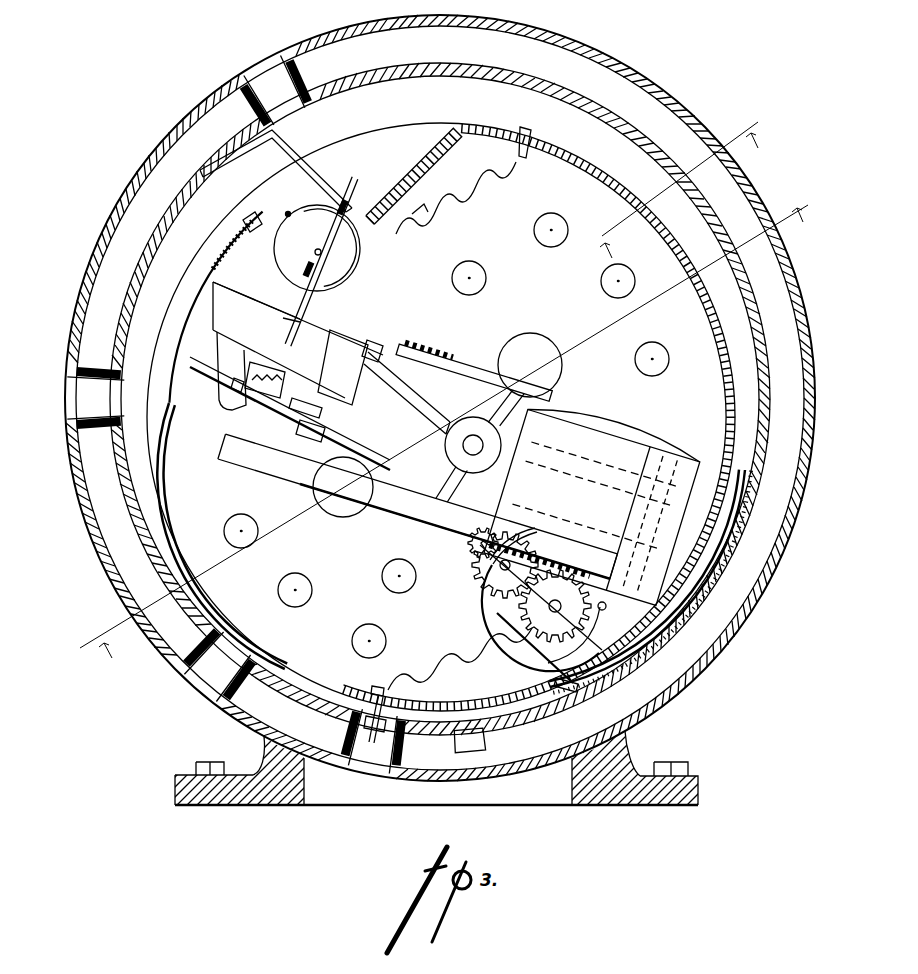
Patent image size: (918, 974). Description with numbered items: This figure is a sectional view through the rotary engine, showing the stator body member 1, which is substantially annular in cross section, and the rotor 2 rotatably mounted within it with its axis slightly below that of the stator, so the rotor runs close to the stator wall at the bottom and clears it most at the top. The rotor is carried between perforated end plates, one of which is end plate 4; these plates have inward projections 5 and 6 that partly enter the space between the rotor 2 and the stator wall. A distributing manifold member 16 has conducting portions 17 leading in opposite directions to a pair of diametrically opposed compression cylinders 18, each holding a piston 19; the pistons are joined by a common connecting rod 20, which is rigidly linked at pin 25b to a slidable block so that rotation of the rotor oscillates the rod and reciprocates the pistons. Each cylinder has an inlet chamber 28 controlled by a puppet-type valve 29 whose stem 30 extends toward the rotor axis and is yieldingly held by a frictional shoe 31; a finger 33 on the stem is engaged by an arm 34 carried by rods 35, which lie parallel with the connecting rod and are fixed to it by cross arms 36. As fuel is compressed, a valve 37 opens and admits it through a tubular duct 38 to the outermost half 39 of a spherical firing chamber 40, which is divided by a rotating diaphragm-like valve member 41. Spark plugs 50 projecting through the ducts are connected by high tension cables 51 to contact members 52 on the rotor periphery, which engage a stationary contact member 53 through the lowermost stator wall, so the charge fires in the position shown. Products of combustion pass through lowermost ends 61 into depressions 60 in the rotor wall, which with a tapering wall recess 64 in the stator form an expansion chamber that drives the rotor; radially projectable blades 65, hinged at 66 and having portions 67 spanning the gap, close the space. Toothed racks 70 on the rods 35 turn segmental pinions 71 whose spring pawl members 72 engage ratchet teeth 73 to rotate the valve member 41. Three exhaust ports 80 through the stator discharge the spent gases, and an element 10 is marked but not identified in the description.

The stator body member 1 is at (530, 35).
The rotor 2 is at (548, 172).
The perforated end plate 4 is at (445, 438).
The projection 5 is at (683, 194).
The projection 6 is at (461, 543).
The transverse rod 10 is at (350, 177).
The distributing manifold member 16 is at (383, 512).
The conducting portion 17 is at (262, 455).
The compression cylinder 18 is at (330, 322).
The piston 19 is at (355, 340).
The connecting rod 20 is at (412, 398).
The pin 25b is at (463, 450).
The inlet chamber 28 is at (178, 400).
The valve 29 is at (218, 412).
The stem 30 is at (272, 440).
The frictional shoe 31 is at (238, 394).
The finger 33 is at (300, 462).
The arm 34 is at (318, 444).
The rod 35 is at (490, 378).
The cross arm 36 is at (478, 412).
The valve 37 is at (238, 252).
The tubular duct 38 is at (288, 220).
The outermost half of firing chamber 39 is at (300, 215).
The spherical firing chamber 40 is at (420, 210).
The valve member 41 is at (315, 250).
The spark plug 50 is at (253, 222).
The high tension cable 51 is at (465, 205).
The contact member 52 is at (527, 132).
The stationary contact member 53 is at (372, 745).
The depression 60 is at (408, 150).
The lowermost end 61 is at (345, 240).
The tapering wall recess 64 is at (470, 753).
The radially projectable blade 65 is at (205, 183).
The hinge mounting 66 is at (160, 350).
The blade portion 67 is at (295, 142).
The toothed rack 70 is at (417, 340).
The segmental pinion 71 is at (500, 600).
The spring pawl member 72 is at (486, 562).
The ratchet teeth 73 is at (478, 540).
The exhaust port 80 is at (259, 91).